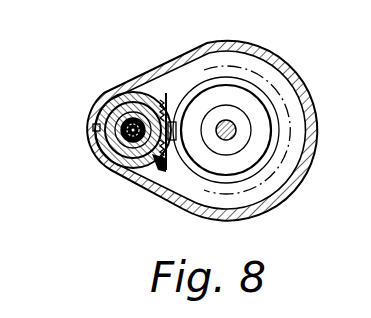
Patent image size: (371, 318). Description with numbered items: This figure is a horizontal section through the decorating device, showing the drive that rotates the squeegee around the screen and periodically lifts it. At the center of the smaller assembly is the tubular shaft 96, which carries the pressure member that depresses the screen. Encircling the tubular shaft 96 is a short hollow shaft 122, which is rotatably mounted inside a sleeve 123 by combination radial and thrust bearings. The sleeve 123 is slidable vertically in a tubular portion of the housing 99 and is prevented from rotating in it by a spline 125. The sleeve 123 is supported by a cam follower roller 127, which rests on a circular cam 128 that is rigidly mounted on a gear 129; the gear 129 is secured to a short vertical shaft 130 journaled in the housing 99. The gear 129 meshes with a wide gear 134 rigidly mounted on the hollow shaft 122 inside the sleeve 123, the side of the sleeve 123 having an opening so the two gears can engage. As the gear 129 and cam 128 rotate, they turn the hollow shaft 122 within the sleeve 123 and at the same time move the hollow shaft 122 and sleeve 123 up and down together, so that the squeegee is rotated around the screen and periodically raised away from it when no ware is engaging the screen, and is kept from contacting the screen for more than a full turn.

The tubular shaft 96 is at (113, 118).
The housing 99 is at (306, 83).
The hollow shaft 122 is at (106, 168).
The sleeve 123 is at (106, 150).
The spline 125 is at (92, 129).
The cam follower roller 127 is at (172, 163).
The circular cam 128 is at (246, 85).
The gear 129 is at (160, 95).
The short vertical shaft 130 is at (228, 141).
The wide gear 134 is at (166, 96).